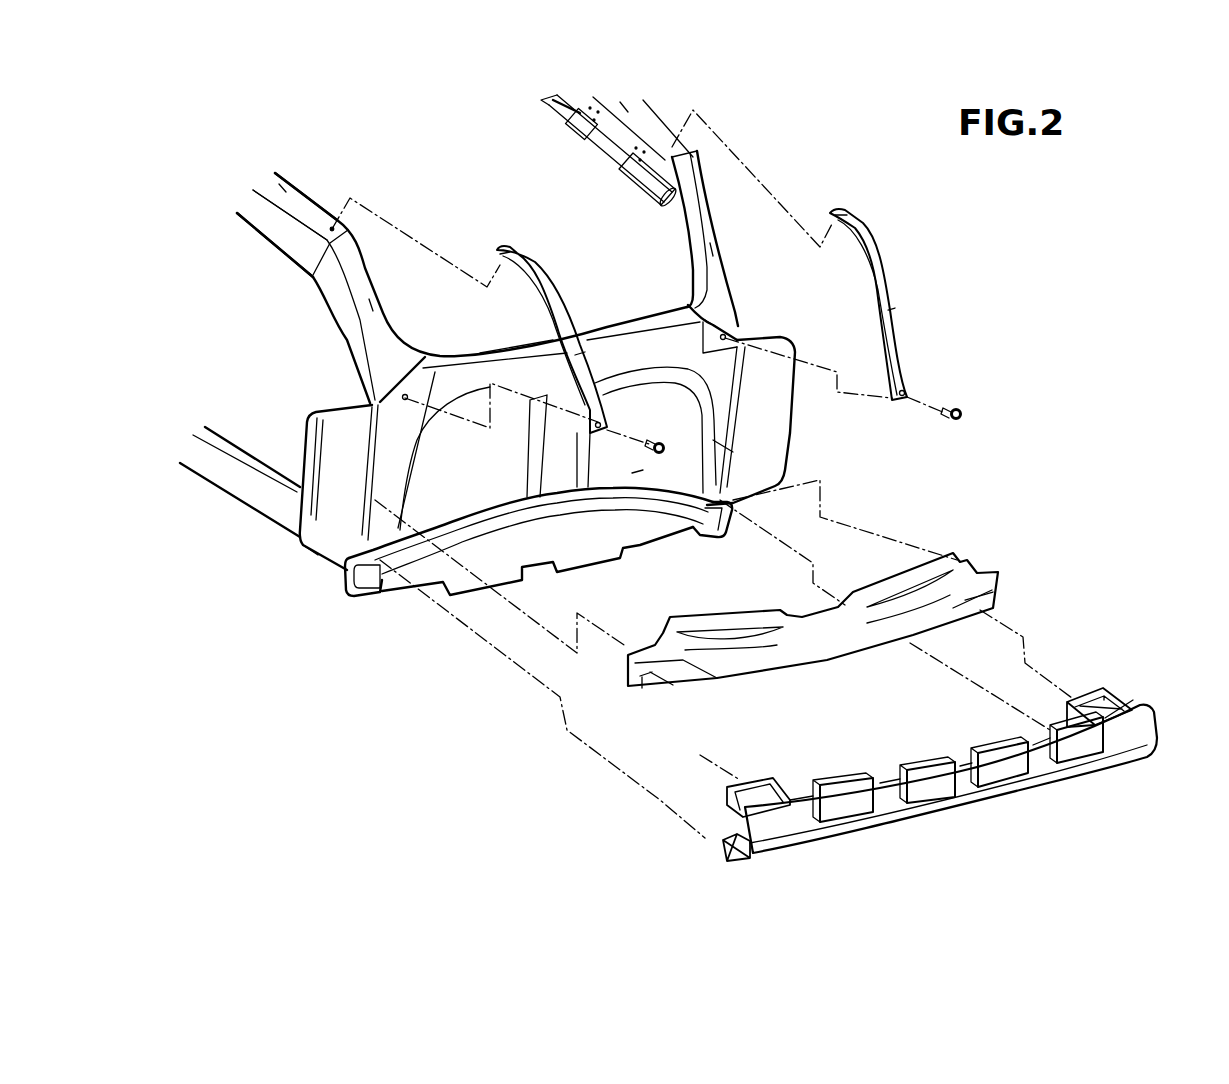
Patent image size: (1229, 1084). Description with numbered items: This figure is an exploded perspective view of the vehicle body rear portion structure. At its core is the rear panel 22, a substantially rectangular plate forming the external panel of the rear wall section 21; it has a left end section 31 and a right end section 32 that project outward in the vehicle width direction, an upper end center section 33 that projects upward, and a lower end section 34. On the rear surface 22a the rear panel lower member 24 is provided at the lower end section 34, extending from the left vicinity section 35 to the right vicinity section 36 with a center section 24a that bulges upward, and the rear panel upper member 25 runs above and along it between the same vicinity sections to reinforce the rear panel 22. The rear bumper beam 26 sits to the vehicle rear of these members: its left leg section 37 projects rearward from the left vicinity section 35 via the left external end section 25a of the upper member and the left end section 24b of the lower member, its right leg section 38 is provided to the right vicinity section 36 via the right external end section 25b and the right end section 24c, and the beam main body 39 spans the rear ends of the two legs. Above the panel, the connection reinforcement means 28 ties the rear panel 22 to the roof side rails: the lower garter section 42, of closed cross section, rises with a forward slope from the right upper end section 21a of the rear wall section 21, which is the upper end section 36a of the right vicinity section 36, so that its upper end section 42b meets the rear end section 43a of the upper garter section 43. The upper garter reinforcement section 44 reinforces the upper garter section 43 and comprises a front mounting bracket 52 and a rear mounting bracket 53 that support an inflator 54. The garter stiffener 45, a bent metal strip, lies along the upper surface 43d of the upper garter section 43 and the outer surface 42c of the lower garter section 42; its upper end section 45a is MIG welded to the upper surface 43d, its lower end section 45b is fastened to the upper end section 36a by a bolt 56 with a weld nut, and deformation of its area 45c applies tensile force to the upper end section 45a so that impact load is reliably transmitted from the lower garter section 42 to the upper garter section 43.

The rear wall section 21 is at (557, 426).
The right upper end section of the rear wall section 21a is at (713, 325).
The rear panel 22 is at (547, 462).
The rear surface of the rear panel 22a is at (637, 475).
The rear panel lower member 24 is at (563, 584).
The center section of the rear panel lower member 24a is at (555, 492).
The left end section of the rear panel lower member 24b is at (369, 592).
The right end section of the rear panel lower member 24c is at (718, 535).
The rear panel upper member 25 is at (828, 672).
The left external end section of the rear panel upper member 25a is at (643, 690).
The right external end section of the rear panel upper member 25b is at (987, 603).
The rear bumper beam 26 is at (918, 767).
The connection reinforcement means 28 is at (763, 307).
The left end section of the rear panel 31 is at (303, 538).
The right end section of the rear panel 32 is at (770, 448).
The upper end center section of the rear panel 33 is at (540, 365).
The lower end section of the rear panel 34 is at (535, 567).
The left vicinity section of the rear panel 35 is at (318, 563).
The right vicinity section of the rear panel 36 is at (722, 447).
The upper end section of the right vicinity section 36a is at (737, 335).
The left leg section 37 is at (722, 840).
The right leg section 38 is at (1112, 698).
The beam main body 39 is at (897, 807).
The lower garter section 42 is at (343, 313).
The upper end section of the lower garter section 42b is at (371, 305).
The outer surface of the lower garter section 42c is at (712, 250).
The upper garter section 43 is at (270, 233).
The rear end section of the upper garter section 43a is at (683, 147).
The upper surface of the upper garter section 43d is at (285, 186).
The upper garter reinforcement section 44 is at (606, 172).
The garter stiffener 45 is at (570, 304).
The upper end section of the garter stiffener 45a is at (515, 250).
The lower end section of the garter stiffener 45b is at (590, 417).
The area of the garter stiffener 45c is at (580, 363).
The front mounting bracket 52 is at (580, 130).
The rear mounting bracket 53 is at (637, 180).
The inflator 54 is at (600, 152).
The bolt 56 is at (648, 438).